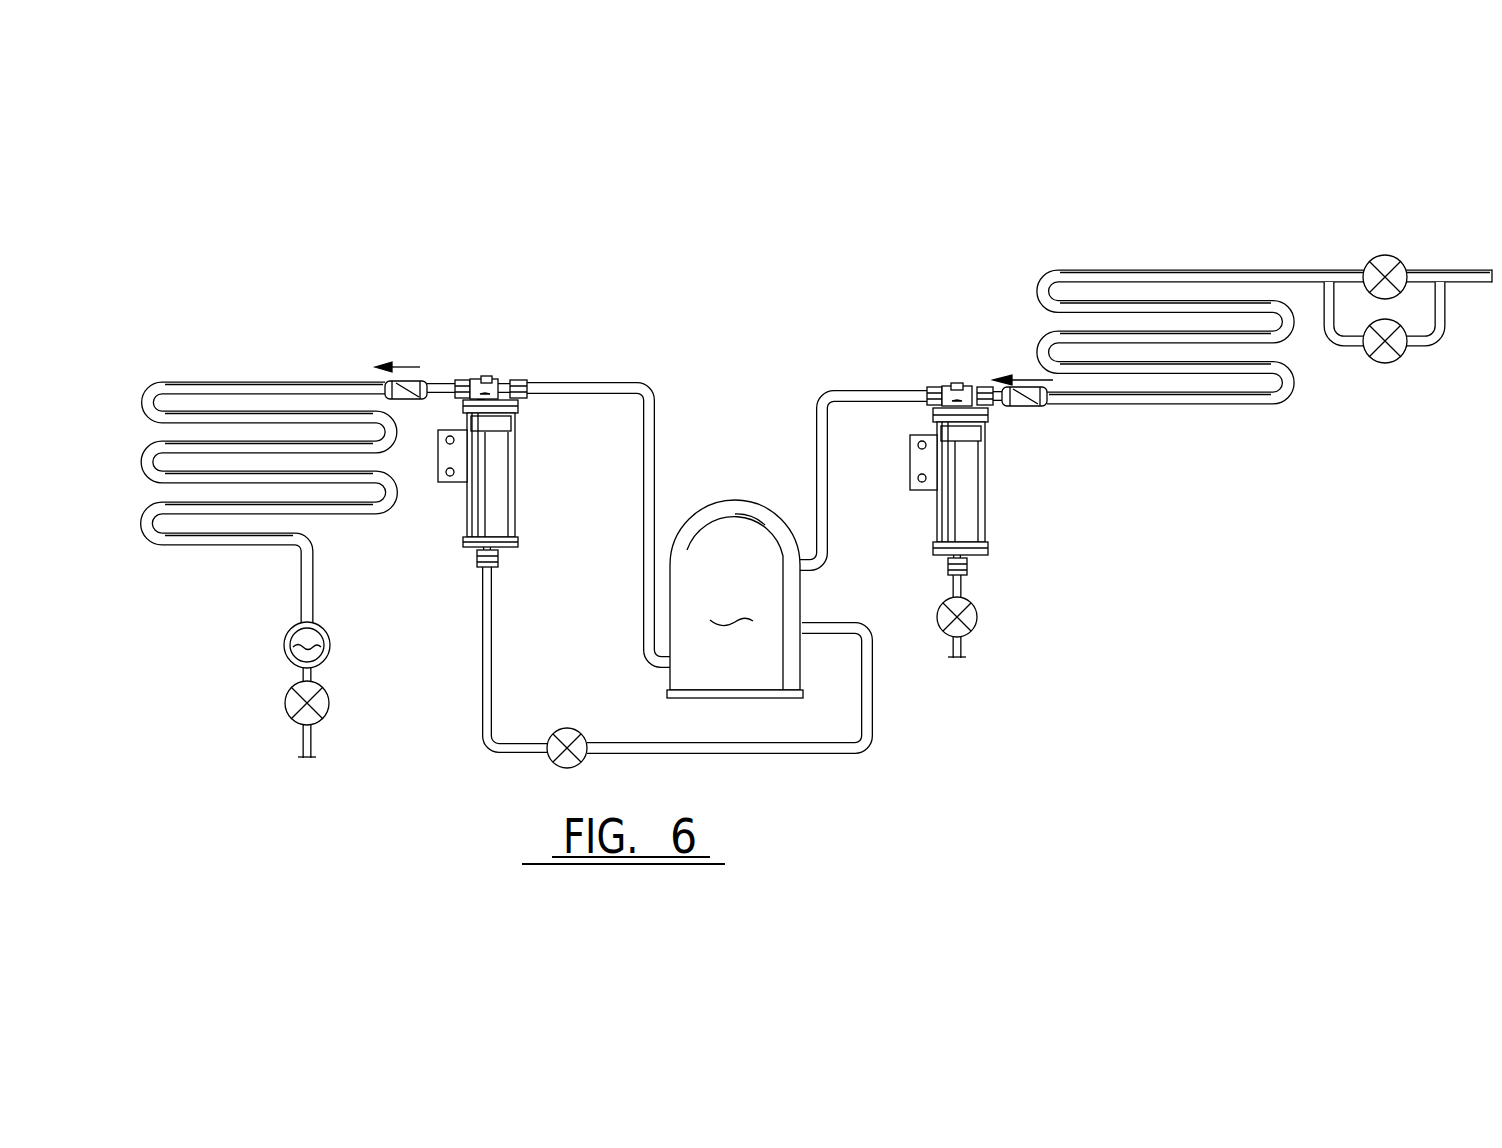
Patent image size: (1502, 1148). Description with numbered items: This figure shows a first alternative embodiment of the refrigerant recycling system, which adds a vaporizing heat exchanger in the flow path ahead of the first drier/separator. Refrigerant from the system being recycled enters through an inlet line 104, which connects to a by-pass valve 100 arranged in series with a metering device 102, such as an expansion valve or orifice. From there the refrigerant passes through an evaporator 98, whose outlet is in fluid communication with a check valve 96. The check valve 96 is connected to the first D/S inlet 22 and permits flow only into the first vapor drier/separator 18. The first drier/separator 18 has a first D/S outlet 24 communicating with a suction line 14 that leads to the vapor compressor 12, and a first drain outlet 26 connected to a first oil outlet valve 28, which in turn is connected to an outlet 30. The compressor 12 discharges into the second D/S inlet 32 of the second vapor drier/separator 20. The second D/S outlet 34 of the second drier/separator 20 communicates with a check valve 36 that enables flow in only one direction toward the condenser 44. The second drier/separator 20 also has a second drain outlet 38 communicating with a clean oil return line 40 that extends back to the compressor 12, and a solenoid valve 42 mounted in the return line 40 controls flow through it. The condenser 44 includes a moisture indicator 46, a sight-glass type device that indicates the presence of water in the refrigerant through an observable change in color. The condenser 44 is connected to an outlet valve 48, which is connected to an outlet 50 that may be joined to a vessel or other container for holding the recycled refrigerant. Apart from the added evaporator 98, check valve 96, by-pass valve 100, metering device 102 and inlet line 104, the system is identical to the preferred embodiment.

The vapor compressor 12 is at (735, 599).
The suction line 14 is at (825, 533).
The first vapor drier/separator 18 is at (975, 518).
The second vapor drier/separator 20 is at (520, 442).
The first D/S inlet 22 is at (993, 407).
The first D/S outlet 24 is at (937, 385).
The first drain outlet 26 is at (967, 572).
The first oil outlet valve 28 is at (967, 632).
The outlet 30 is at (957, 667).
The second D/S inlet 32 is at (523, 378).
The second D/S outlet 34 is at (462, 380).
The check valve 36 is at (444, 374).
The second drain outlet 38 is at (498, 558).
The clean oil return line 40 is at (492, 605).
The solenoid valve 42 is at (580, 733).
The condenser 44 is at (215, 380).
The moisture indicator 46 is at (328, 635).
The outlet valve 48 is at (329, 705).
The outlet 50 is at (303, 757).
The check valve 96 is at (1043, 400).
The evaporator 98 is at (1079, 269).
The by-pass valve 100 is at (1373, 255).
The metering device 102 is at (1383, 363).
The inlet line 104 is at (1492, 277).